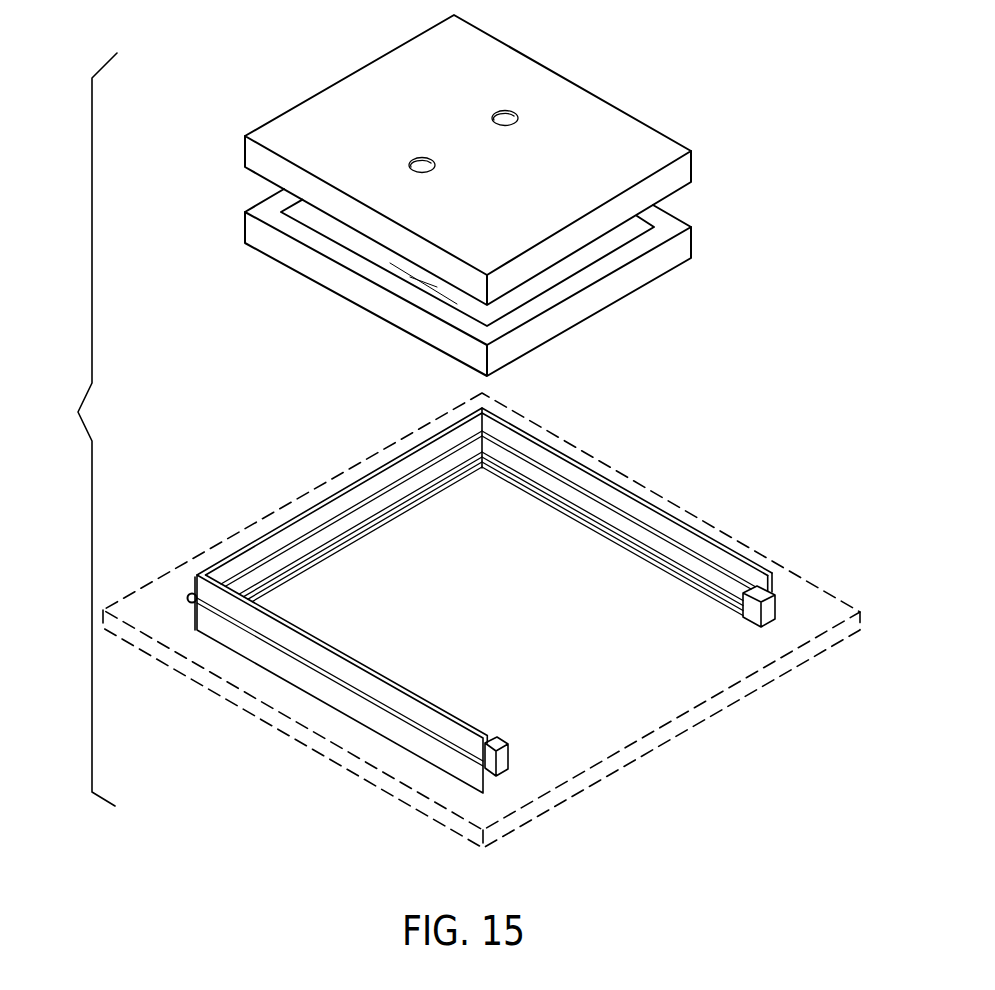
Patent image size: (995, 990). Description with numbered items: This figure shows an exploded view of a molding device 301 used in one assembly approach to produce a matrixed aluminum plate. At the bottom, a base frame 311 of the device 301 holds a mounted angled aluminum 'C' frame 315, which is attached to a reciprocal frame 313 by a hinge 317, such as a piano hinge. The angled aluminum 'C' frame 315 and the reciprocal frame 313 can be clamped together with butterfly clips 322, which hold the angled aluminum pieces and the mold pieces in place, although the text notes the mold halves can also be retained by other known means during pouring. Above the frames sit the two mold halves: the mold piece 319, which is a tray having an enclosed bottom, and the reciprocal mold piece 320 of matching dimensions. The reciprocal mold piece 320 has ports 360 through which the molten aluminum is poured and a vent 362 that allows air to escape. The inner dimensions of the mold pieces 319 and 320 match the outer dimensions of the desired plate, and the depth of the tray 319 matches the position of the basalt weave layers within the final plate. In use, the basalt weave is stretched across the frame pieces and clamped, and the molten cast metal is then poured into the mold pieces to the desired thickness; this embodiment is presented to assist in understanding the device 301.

The device 301 is at (71, 429).
The base frame 311 is at (338, 756).
The reciprocal frame 313 is at (737, 567).
The angled aluminum 'C' frame 315 is at (782, 578).
The hinge 317 is at (190, 595).
The mold piece 319 is at (681, 250).
The reciprocal mold piece 320 is at (681, 178).
The butterfly clips 322 is at (777, 622).
The ports 360 is at (436, 168).
The vent 362 is at (520, 121).